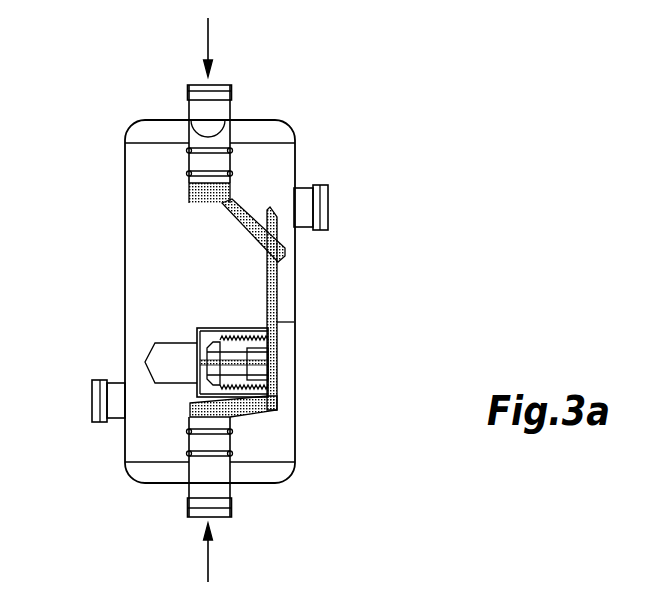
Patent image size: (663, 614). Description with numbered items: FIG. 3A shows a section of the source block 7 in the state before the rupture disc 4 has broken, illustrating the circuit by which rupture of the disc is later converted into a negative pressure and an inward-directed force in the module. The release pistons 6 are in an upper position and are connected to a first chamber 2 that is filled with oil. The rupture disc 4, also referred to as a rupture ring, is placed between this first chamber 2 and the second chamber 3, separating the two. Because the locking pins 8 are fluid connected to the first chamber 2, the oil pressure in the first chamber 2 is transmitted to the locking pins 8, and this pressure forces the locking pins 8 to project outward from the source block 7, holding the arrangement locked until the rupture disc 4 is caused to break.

The first chamber 2 is at (277, 365).
The second chamber 3 is at (153, 362).
The rupture disc 4 is at (197, 366).
The release pistons 6 is at (231, 110).
The source block 7 is at (118, 76).
The locking pins 8 is at (328, 208).